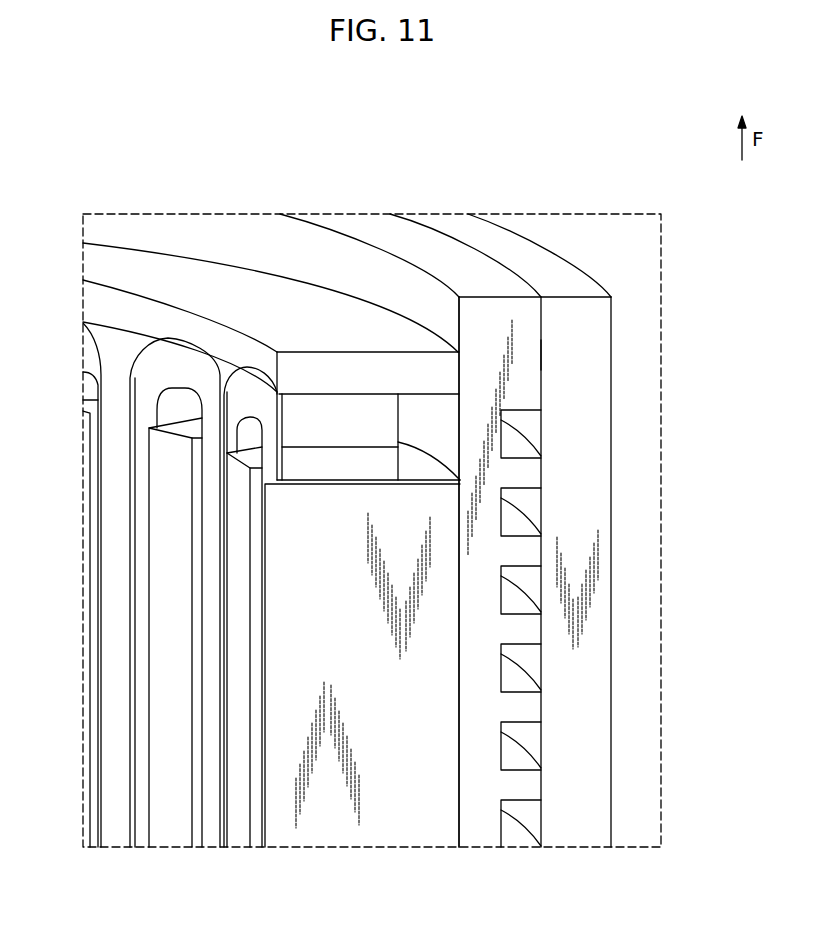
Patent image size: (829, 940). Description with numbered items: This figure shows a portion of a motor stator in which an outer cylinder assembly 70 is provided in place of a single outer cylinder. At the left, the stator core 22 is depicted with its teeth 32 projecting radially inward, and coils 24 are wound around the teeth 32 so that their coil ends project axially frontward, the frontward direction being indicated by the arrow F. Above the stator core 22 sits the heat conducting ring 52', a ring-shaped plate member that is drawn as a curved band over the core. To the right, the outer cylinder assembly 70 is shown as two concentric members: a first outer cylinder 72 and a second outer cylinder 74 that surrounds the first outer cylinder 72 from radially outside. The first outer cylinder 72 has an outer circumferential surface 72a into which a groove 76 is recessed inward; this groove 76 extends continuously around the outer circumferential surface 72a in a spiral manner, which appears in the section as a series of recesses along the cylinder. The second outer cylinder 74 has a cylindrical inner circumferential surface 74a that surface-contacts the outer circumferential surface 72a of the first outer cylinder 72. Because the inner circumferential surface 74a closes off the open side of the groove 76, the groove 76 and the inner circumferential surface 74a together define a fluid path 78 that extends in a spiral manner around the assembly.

The stator core 22 is at (462, 815).
The coil 24 is at (212, 553).
The teeth 32 is at (242, 655).
The heat conducting ring 52' is at (271, 267).
The outer cylinder assembly 70 is at (513, 146).
The first outer cylinder 72 is at (498, 312).
The second outer cylinder 74 is at (563, 312).
The outer circumferential surface 72a is at (541, 356).
The inner circumferential surface 74a is at (542, 376).
The groove 76 is at (526, 490).
The fluid path 78 is at (515, 672).